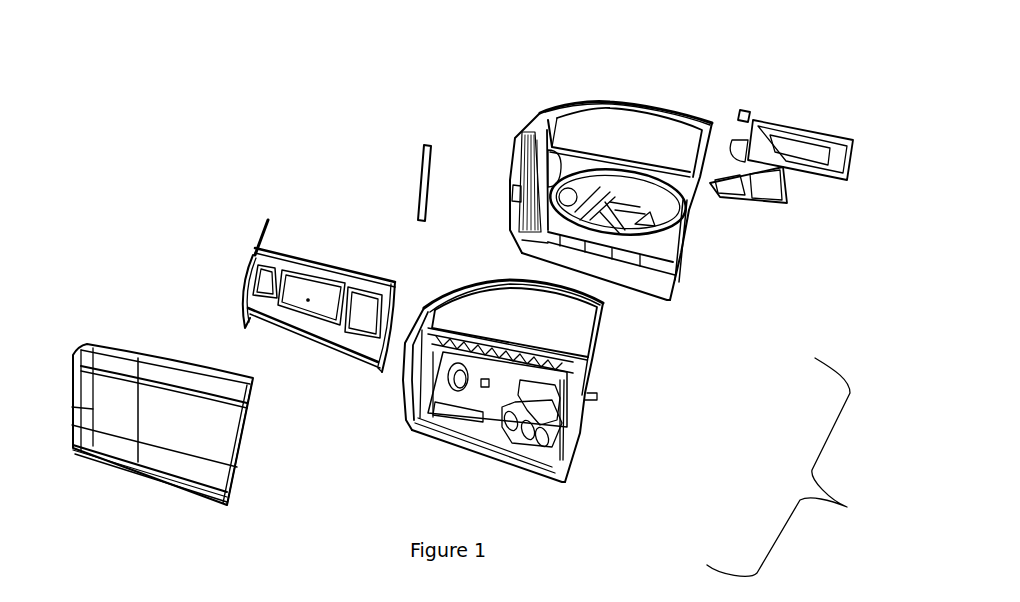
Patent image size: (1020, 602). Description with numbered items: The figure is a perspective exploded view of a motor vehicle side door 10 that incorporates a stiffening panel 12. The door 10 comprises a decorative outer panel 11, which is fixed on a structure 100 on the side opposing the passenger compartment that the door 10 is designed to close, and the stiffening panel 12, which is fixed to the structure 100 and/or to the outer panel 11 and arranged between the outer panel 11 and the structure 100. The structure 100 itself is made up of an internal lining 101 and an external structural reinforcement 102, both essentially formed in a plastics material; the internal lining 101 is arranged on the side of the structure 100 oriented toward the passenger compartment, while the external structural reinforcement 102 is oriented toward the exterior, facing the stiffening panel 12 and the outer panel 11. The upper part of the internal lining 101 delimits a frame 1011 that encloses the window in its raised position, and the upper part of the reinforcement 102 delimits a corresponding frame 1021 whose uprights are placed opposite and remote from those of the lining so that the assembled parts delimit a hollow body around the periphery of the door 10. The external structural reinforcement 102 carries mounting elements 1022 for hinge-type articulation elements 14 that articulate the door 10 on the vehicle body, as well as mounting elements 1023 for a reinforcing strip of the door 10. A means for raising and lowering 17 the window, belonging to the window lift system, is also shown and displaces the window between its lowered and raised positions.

The motor vehicle door 10 is at (335, 63).
The decorative outer panel 11 is at (187, 467).
The stiffening panel 12 is at (345, 277).
The articulation elements 14 is at (428, 177).
The means for raising and lowering the window 17 is at (820, 200).
The structure 100 is at (799, 467).
The internal lining 101 is at (682, 250).
The frame of the internal lining 1011 is at (633, 98).
The external structural reinforcement 102 is at (573, 433).
The frame of the external structural reinforcement 1021 is at (482, 283).
The mounting elements for articulation elements 1022 is at (423, 370).
The mounting elements of a reinforcing strip 1023 is at (575, 357).